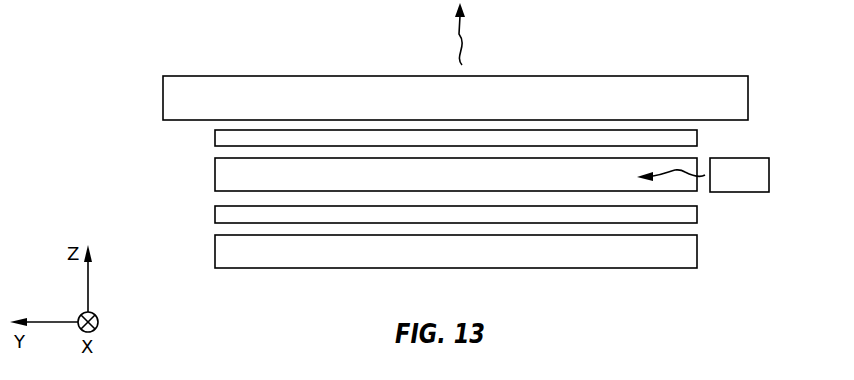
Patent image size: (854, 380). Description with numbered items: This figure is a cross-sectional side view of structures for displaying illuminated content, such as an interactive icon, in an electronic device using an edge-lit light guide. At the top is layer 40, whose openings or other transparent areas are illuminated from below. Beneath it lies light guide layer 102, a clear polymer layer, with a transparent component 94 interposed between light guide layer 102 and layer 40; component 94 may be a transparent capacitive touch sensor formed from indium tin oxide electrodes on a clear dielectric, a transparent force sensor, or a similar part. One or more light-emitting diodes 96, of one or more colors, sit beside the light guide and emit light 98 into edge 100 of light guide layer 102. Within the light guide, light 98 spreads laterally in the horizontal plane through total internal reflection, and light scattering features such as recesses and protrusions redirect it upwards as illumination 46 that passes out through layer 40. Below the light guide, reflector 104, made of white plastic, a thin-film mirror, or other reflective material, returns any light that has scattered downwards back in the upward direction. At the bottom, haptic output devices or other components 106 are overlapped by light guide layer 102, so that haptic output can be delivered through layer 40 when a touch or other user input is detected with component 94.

The layer 40 is at (748, 93).
The illumination 46 is at (465, 34).
The component 94 is at (697, 138).
The light-emitting diodes 96 is at (758, 173).
The light 98 is at (675, 171).
The edge 100 is at (697, 183).
The light guide layer 102 is at (222, 173).
The reflector 104 is at (222, 213).
The haptic output devices 106 is at (222, 251).